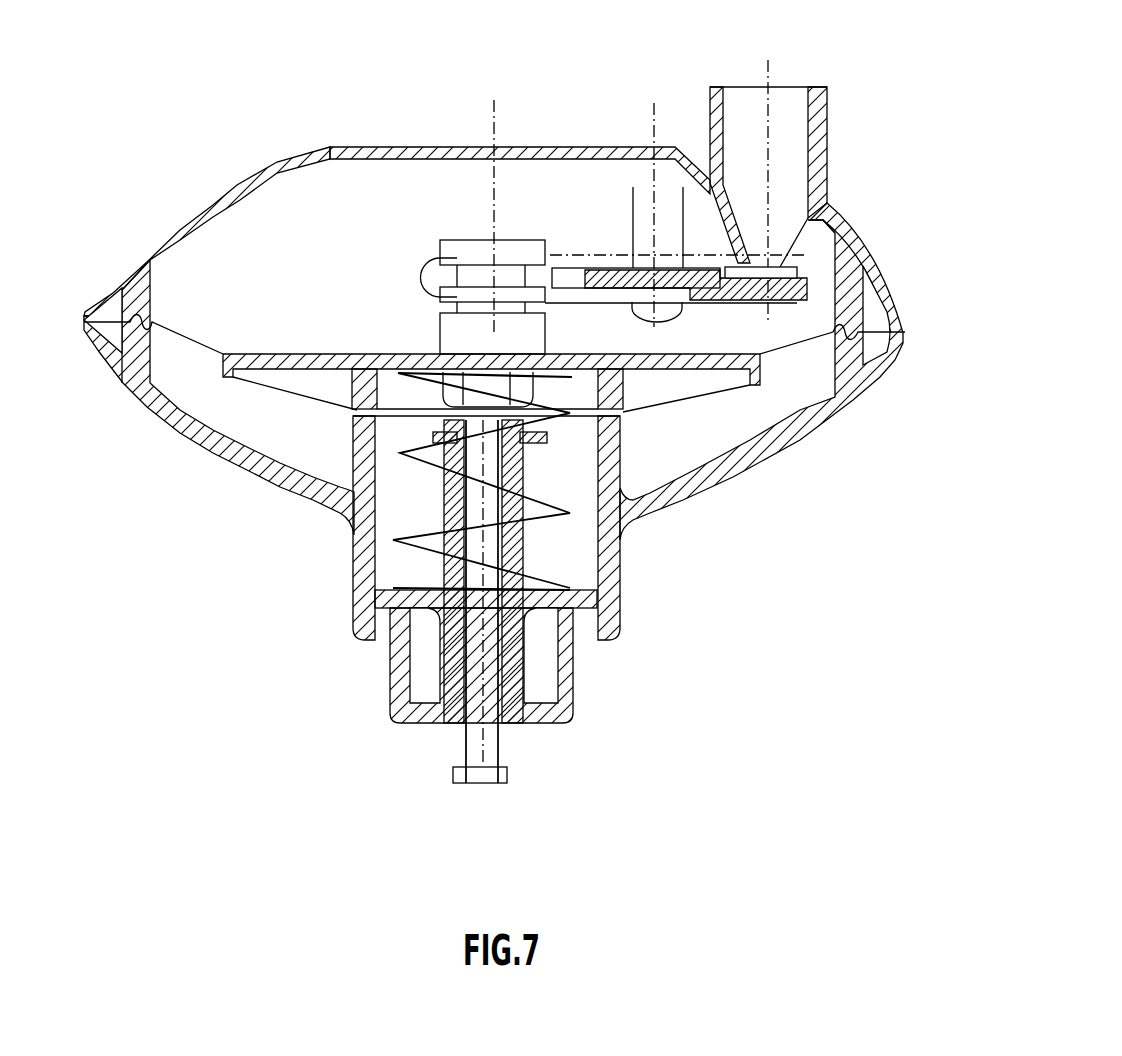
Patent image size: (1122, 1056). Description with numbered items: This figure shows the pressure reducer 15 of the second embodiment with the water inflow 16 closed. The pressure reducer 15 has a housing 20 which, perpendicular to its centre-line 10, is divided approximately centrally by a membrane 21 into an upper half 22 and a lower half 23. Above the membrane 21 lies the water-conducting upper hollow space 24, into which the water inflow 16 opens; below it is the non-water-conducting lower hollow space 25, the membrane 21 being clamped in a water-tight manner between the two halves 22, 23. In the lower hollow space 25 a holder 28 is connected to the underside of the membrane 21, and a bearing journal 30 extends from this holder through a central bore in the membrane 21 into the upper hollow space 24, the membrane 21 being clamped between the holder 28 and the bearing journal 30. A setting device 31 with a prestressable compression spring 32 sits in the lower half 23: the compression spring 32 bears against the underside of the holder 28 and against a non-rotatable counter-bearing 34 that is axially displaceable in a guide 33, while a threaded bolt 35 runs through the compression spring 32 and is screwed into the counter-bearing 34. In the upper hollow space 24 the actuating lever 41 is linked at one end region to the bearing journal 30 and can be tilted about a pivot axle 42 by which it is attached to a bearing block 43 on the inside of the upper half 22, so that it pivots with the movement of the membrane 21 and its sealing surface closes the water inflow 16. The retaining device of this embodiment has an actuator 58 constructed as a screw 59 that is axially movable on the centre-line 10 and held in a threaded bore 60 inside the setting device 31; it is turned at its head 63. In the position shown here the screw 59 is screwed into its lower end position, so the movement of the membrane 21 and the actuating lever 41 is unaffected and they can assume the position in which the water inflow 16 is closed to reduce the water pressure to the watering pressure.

The centre-line 10 is at (482, 785).
The pressure reducer 15 is at (202, 140).
The water inflow 16 is at (713, 90).
The housing 20 is at (335, 149).
The membrane 21 is at (166, 322).
The upper half 22 is at (283, 163).
The lower half 23 is at (157, 412).
The upper hollow space 24 is at (533, 190).
The lower hollow space 25 is at (213, 407).
The holder 28 is at (300, 377).
The bearing journal 30 is at (460, 245).
The setting device 31 is at (381, 707).
The compression spring 32 is at (535, 583).
The guide 33 is at (352, 547).
The counter-bearing 34 is at (383, 573).
The threaded bolt 35 is at (513, 673).
The actuating lever 41 is at (595, 272).
The pivot axle 42 is at (658, 273).
The bearing block 43 is at (643, 187).
The actuator 58 is at (503, 740).
The screw 59 is at (512, 742).
The threaded bore 60 is at (523, 450).
The head 63 is at (453, 774).